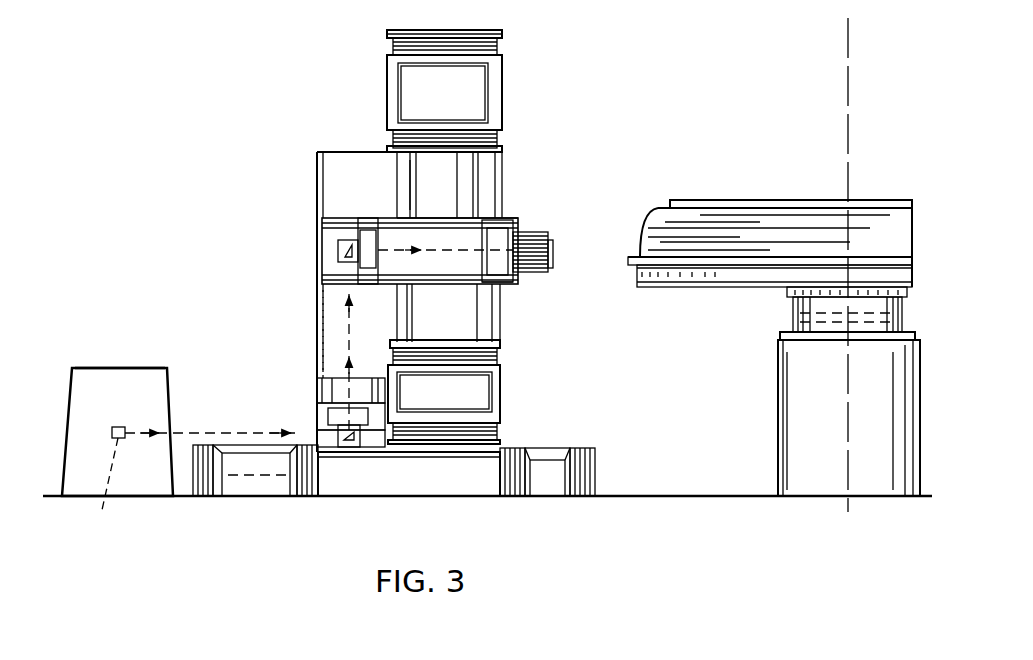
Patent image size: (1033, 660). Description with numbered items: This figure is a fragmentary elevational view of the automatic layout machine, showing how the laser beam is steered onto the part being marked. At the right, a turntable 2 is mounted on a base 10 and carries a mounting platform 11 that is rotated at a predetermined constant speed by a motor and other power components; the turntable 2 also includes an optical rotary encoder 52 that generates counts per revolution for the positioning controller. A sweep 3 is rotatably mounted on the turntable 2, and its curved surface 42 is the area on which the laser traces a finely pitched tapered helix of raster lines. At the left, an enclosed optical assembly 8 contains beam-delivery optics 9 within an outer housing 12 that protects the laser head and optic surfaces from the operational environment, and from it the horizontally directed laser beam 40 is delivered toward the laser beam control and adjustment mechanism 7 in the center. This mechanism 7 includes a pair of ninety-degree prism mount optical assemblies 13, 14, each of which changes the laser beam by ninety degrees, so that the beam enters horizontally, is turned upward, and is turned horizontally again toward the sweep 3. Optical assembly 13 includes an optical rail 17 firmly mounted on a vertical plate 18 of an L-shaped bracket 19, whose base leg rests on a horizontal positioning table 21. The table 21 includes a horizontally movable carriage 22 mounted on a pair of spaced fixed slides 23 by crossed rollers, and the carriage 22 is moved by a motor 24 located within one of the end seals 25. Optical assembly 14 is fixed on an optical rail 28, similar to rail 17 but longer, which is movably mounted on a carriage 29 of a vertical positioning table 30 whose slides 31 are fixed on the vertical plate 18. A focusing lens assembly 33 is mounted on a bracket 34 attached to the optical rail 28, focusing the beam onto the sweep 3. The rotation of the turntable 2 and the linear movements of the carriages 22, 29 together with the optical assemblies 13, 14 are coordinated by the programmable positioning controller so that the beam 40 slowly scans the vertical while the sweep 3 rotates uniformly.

The turntable 2 is at (786, 308).
The sweep 3 is at (653, 212).
The laser beam control and adjustment mechanism 7 is at (512, 302).
The enclosed optical assembly 8 is at (103, 366).
The beam-delivery optics 9 is at (100, 512).
The base 10 is at (792, 383).
The mounting platform 11 is at (740, 275).
The outer housing 12 is at (75, 405).
The optical assembly 13 is at (312, 382).
The optical assembly 14 is at (337, 238).
The optical rail 17 is at (312, 417).
The vertical plate 18 is at (337, 185).
The L-shaped bracket 19 is at (315, 333).
The horizontal positioning table 21 is at (383, 494).
The horizontally movable carriage 22 is at (468, 470).
The fixed slides 23 is at (437, 455).
The motor 24 is at (264, 487).
The end seals 25 is at (203, 490).
The optical rail 28 is at (332, 257).
The carriage 29 is at (457, 193).
The vertical positioning table 30 is at (482, 197).
The slides 31 is at (407, 175).
The focusing lens assembly 33 is at (528, 220).
The bracket 34 is at (520, 280).
The laser beam 40 is at (220, 432).
The curved surface 42 is at (733, 223).
The optical rotary encoder 52 is at (889, 310).